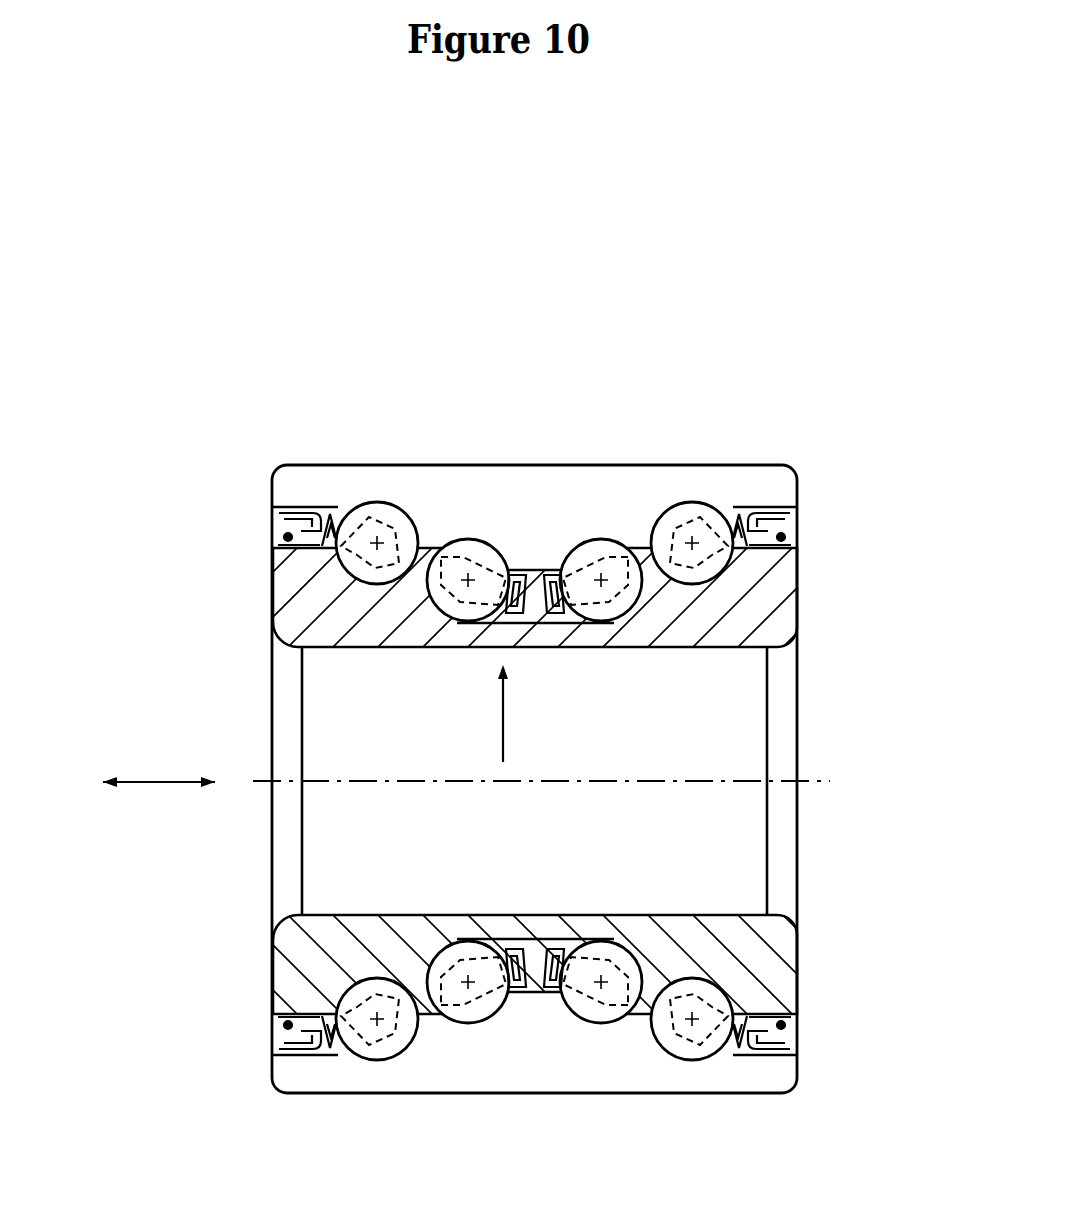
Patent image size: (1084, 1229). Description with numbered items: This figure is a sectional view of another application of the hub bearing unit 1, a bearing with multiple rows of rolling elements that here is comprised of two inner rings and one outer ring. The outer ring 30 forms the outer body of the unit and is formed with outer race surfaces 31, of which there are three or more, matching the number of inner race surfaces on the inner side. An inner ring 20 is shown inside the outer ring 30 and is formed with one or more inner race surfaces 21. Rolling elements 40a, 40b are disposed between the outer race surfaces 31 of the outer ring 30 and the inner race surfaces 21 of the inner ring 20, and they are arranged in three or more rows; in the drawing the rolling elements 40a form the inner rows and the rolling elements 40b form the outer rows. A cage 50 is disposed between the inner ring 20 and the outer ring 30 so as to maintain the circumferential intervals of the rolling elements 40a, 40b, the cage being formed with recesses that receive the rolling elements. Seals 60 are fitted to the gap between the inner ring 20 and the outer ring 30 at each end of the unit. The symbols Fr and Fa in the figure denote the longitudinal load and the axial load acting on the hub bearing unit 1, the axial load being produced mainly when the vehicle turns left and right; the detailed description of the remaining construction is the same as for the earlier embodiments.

The hub bearing unit 1 is at (487, 252).
The inner ring 20 is at (306, 604).
The inner race surface 21 is at (410, 647).
The outer ring 30 is at (617, 485).
The outer race surface 31 is at (683, 503).
The rolling element 40a is at (607, 540).
The rolling element 40b is at (412, 517).
The cage 50 is at (360, 532).
The seal 60 is at (273, 512).